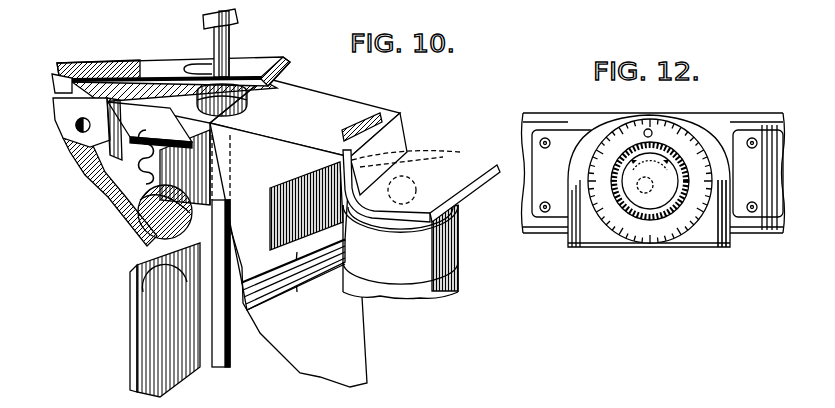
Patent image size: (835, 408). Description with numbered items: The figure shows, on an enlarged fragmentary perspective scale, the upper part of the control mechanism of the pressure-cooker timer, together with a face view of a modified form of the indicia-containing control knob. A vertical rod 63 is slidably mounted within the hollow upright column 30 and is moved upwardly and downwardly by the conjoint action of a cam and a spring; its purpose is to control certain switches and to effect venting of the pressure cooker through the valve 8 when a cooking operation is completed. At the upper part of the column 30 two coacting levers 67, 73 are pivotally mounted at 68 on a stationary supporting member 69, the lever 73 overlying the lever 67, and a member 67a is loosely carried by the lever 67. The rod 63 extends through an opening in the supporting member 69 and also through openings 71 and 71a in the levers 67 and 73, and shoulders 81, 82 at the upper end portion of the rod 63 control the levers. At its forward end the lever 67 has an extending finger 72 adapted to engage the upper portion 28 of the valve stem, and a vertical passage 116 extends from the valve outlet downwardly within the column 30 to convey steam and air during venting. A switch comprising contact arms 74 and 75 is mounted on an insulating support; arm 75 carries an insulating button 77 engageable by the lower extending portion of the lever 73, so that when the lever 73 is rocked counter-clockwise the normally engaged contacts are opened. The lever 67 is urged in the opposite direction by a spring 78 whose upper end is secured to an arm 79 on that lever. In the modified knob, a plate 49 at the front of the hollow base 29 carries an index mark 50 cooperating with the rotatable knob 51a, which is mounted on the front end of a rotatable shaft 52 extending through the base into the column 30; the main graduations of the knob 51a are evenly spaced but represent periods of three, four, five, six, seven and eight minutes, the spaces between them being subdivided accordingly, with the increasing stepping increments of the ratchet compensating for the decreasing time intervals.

In FIG. 10, the valve 8 is at (465, 255).
In FIG. 10, the upper portion of the valve stem 28 is at (410, 180).
In FIG. 12, the hollow base 29 is at (560, 113).
In FIG. 10, the hollow upright column 30 is at (357, 350).
In FIG. 12, the plate 49 is at (697, 132).
In FIG. 12, the index mark 50 is at (652, 113).
In FIG. 12, the knob 51a is at (667, 244).
In FIG. 12, the rotatable shaft 52 is at (650, 181).
In FIG. 10, the vertical rod 63 is at (230, 355).
In FIG. 10, the lever 67 is at (338, 110).
In FIG. 10, the member 67a is at (300, 178).
In FIG. 10, the pivot 68 is at (72, 125).
In FIG. 10, the stationary supporting member 69 is at (113, 143).
In FIG. 10, the opening in lever 67 71 is at (248, 107).
In FIG. 10, the opening in lever 73 71a is at (200, 62).
In FIG. 10, the extending finger 72 is at (467, 170).
In FIG. 10, the lever 73 is at (137, 67).
In FIG. 10, the contact arm 74 is at (130, 303).
In FIG. 10, the contact arm 75 is at (168, 340).
In FIG. 10, the insulating button 77 is at (145, 248).
In FIG. 10, the spring 78 is at (130, 173).
In FIG. 10, the arm 79 is at (150, 125).
In FIG. 10, the shoulder 81 is at (270, 85).
In FIG. 10, the shoulder 82 is at (240, 22).
In FIG. 10, the vertical passage 116 is at (296, 286).